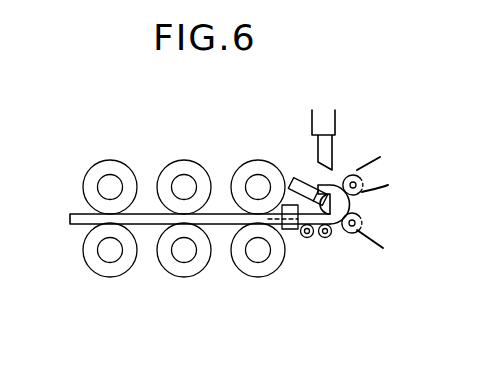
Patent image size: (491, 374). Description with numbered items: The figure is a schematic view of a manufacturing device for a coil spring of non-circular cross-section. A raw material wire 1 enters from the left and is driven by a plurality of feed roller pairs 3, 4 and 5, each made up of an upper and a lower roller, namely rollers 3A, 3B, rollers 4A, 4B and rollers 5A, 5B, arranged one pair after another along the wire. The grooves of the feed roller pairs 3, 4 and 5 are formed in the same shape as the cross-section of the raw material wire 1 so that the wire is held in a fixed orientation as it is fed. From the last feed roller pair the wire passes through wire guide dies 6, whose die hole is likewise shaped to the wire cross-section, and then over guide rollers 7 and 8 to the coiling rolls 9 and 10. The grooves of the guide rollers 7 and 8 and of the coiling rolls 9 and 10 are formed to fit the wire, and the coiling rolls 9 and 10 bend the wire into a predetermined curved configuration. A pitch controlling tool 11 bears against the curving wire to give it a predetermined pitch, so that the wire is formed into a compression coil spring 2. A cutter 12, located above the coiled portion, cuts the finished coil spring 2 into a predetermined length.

The raw material wire 1 is at (68, 215).
The compression coil spring 2 is at (340, 180).
The feed roller pair 3 is at (121, 218).
The feed roller 3A is at (114, 160).
The feed roller 3B is at (128, 273).
The feed roller pair 4 is at (194, 218).
The feed roller 4A is at (186, 160).
The feed roller 4B is at (202, 273).
The feed roller pair 5 is at (275, 218).
The feed roller 5A is at (259, 160).
The feed roller 5B is at (283, 262).
The wire guide dies 6 is at (283, 203).
The guide roller 7 is at (315, 243).
The guide roller 8 is at (337, 238).
The coiling roll 9 is at (365, 217).
The coiling roll 10 is at (372, 162).
The pitch controlling tool 11 is at (306, 175).
The cutter 12 is at (332, 150).